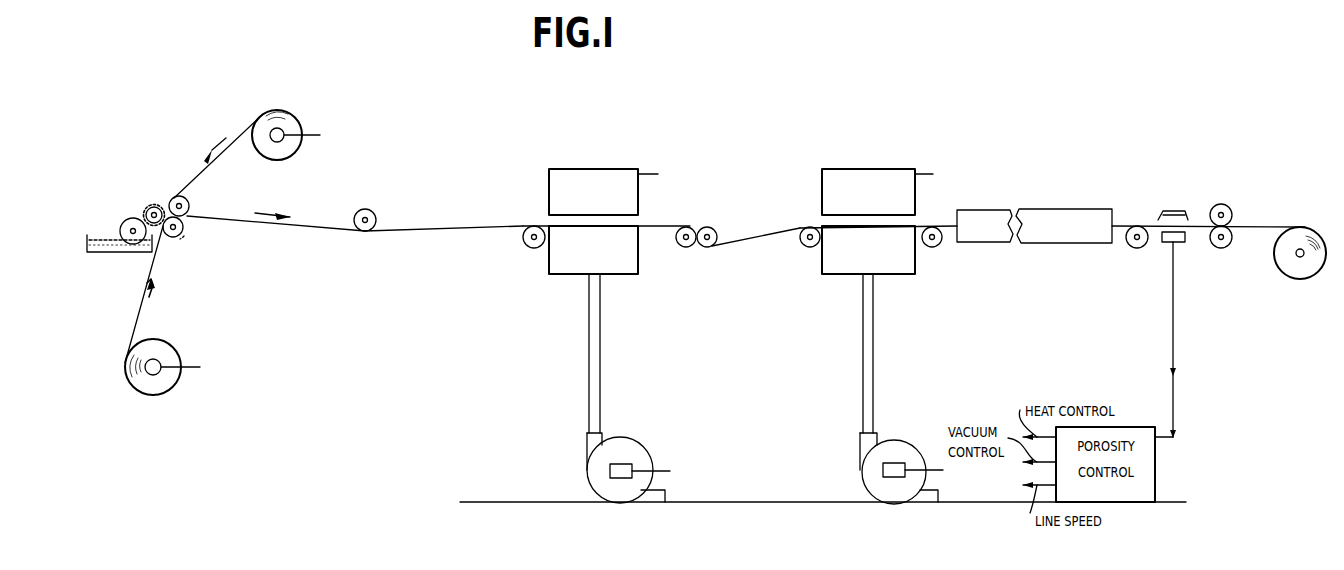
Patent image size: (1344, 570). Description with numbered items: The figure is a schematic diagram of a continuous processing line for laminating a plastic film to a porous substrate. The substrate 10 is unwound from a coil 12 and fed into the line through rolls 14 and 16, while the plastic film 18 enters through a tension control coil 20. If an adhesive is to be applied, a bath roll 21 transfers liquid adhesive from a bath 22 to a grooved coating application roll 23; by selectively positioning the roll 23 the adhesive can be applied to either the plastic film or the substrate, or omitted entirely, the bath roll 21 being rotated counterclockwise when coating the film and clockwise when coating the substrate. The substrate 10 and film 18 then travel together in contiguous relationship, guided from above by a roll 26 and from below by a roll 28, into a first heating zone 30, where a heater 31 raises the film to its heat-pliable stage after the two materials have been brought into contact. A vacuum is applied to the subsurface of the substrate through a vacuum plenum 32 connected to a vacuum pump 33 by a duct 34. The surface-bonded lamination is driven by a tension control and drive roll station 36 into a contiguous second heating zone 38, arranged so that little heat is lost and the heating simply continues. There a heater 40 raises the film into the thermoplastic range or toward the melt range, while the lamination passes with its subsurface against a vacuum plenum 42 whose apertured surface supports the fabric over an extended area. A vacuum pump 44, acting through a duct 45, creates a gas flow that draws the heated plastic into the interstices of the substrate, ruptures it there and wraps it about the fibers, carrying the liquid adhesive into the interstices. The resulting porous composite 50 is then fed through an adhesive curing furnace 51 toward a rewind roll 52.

The substrate 10 is at (137, 317).
The coil 12 is at (172, 345).
The roll 14 is at (189, 199).
The roll 16 is at (185, 231).
The film 18 is at (243, 132).
The tension control coil 20 is at (285, 117).
The bath roll 21 is at (132, 244).
The bath 22 is at (108, 236).
The grooved coating application roll 23 is at (154, 205).
The roll 26 is at (370, 210).
The roll 28 is at (524, 244).
The first heating zone 30 is at (590, 235).
The heater 31 is at (633, 202).
The vacuum plenum 32 is at (547, 266).
The vacuum pump 33 is at (637, 449).
The duct 34 is at (599, 341).
The tension control and drive roll station 36 is at (697, 221).
The second heating zone 38 is at (868, 226).
The heater 40 is at (908, 193).
The vacuum plenum 42 is at (820, 258).
The vacuum pump 44 is at (897, 440).
The duct 45 is at (871, 343).
The porous composite 50 is at (948, 222).
The adhesive curing furnace 51 is at (1045, 209).
The rewind roll 52 is at (1313, 228).